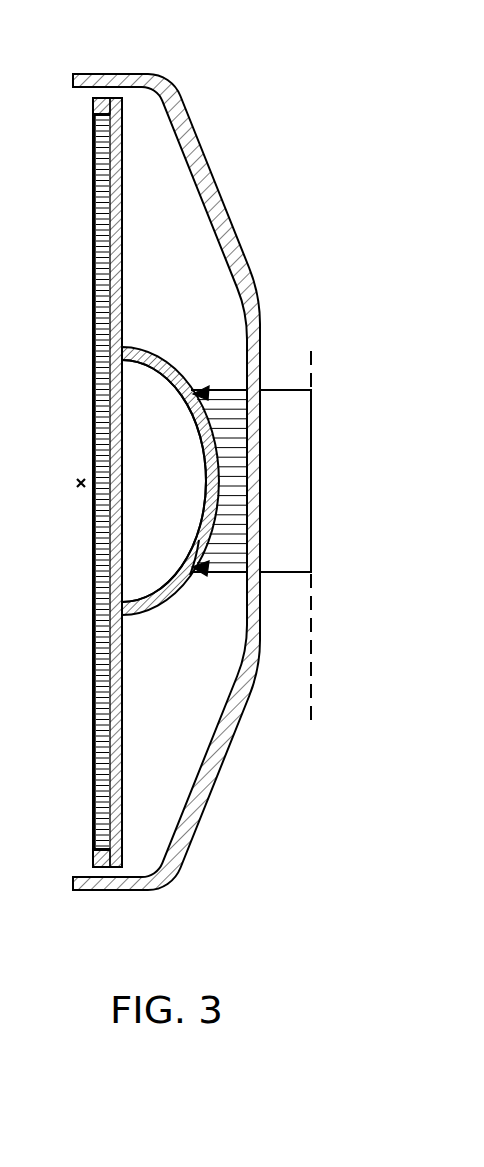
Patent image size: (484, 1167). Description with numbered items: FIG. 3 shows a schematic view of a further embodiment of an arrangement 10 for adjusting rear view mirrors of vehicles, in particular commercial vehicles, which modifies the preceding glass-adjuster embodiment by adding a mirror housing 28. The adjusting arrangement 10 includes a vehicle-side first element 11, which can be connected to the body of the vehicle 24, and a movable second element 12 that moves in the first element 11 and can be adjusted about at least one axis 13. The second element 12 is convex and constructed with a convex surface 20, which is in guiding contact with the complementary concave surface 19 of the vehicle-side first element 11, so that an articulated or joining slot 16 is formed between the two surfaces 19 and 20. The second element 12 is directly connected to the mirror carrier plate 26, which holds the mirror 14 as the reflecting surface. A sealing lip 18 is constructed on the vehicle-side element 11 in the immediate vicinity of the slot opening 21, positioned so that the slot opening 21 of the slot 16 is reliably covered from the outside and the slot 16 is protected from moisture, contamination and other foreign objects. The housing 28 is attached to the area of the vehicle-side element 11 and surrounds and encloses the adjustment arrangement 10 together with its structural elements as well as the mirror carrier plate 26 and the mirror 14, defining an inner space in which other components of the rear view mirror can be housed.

The arrangement for adjusting rear view mirrors 10 is at (302, 108).
The vehicle-side first element 11 is at (298, 357).
The second element 12 is at (166, 354).
The axis 13 is at (81, 490).
The mirror 14 is at (93, 658).
The joining slot 16 is at (197, 432).
The sealing lip 18 is at (200, 574).
The concave surface 19 is at (200, 531).
The convex surface 20 is at (205, 388).
The slot opening 21 is at (193, 557).
The vehicle 24 is at (344, 640).
The mirror carrier plate 26 is at (124, 649).
The mirror housing 28 is at (133, 73).